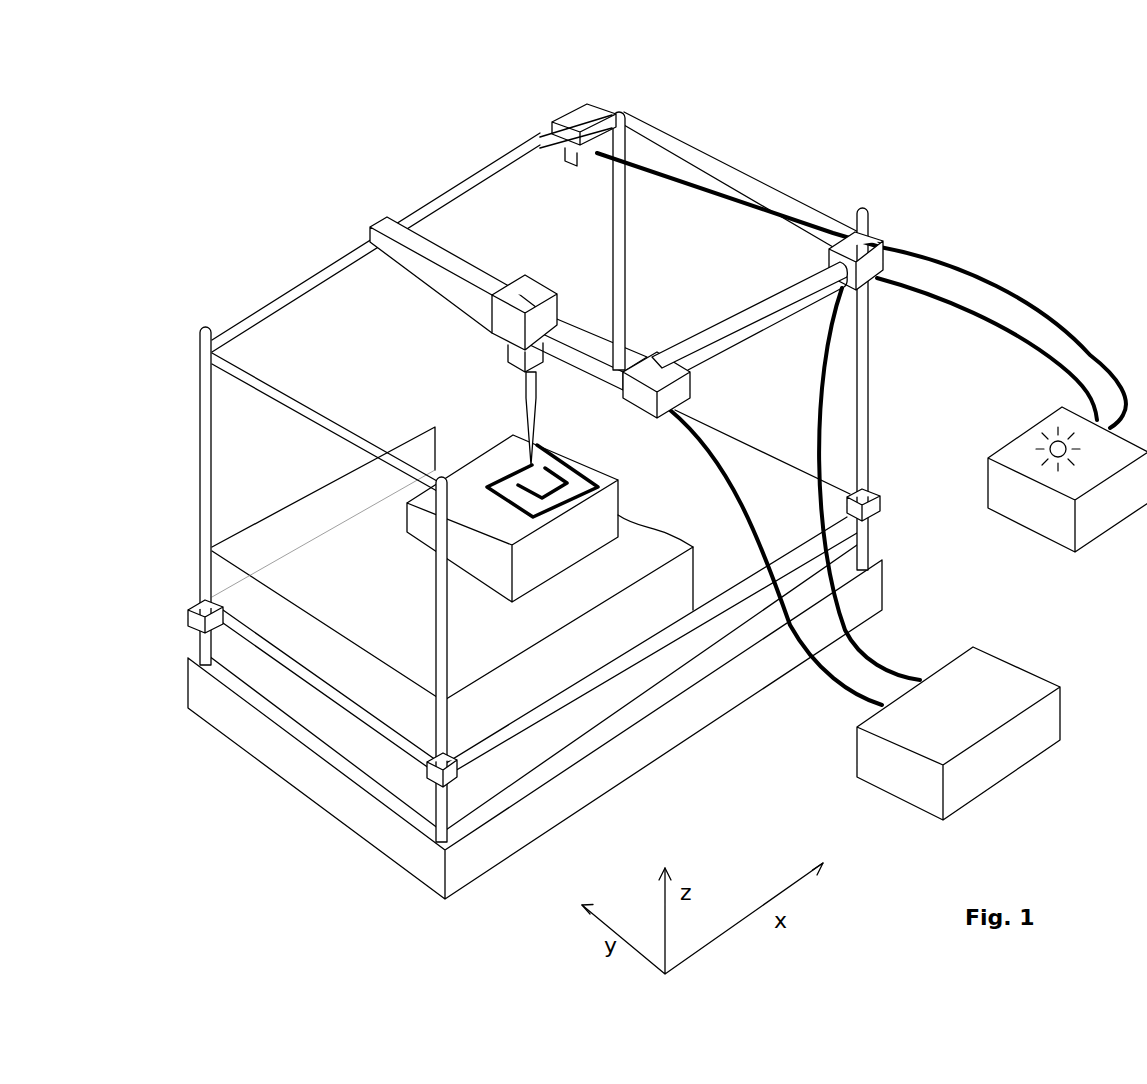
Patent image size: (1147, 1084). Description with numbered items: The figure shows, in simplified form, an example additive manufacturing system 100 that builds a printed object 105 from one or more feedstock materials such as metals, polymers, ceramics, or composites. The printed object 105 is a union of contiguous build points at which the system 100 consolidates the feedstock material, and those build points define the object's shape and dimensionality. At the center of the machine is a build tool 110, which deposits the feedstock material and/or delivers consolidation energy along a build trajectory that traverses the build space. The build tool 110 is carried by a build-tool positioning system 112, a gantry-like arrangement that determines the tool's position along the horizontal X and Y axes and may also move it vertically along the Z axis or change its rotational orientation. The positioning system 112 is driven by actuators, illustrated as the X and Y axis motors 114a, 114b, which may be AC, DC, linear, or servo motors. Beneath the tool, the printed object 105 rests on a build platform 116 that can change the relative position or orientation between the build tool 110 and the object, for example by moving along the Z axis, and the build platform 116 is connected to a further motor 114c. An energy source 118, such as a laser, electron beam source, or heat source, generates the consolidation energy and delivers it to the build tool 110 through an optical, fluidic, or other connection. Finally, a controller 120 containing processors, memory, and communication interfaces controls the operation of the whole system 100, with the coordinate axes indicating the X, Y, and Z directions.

The additive manufacturing system 100 is at (667, 476).
The printed object 105 is at (520, 462).
The build tool 110 is at (533, 273).
The build-tool positioning system 112 is at (593, 332).
The X axis motor 114a is at (572, 108).
The Y axis motor 114b is at (693, 382).
The motor 114c is at (883, 240).
The build platform 116 is at (313, 683).
The energy source 118 is at (1050, 543).
The controller 120 is at (1027, 667).